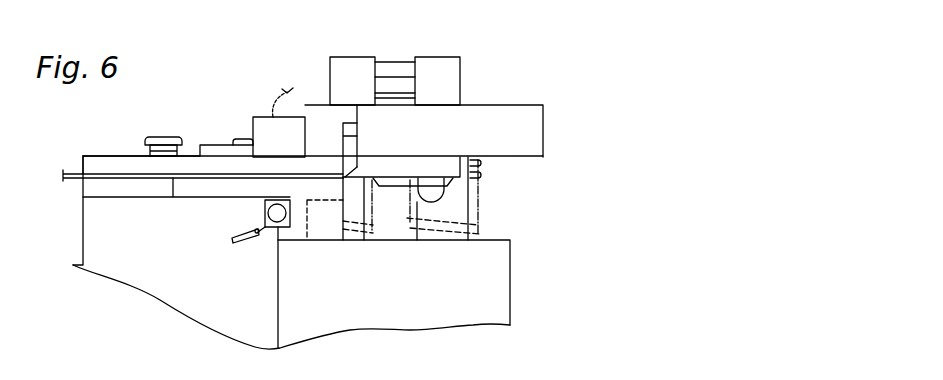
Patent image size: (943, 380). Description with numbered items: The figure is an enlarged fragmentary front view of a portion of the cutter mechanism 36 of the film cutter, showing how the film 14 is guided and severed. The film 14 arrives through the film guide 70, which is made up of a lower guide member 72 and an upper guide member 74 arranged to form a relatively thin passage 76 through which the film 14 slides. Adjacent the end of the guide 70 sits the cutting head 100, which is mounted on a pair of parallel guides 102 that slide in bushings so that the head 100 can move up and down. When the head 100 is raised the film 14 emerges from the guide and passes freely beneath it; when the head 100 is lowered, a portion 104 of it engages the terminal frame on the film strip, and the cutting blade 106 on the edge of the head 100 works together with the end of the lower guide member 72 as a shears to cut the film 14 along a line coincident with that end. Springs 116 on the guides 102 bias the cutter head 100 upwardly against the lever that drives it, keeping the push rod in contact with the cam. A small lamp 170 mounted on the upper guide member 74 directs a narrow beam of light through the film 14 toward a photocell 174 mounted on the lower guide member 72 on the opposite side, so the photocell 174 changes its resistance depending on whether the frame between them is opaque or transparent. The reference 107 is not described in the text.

The film 14 is at (74, 181).
The cutter mechanism 36 is at (557, 200).
The film guide 70 is at (110, 142).
The lower guide member 72 is at (193, 190).
The upper guide member 74 is at (134, 156).
The passage 76 is at (145, 182).
The cutting head 100 is at (545, 129).
The guides 102 is at (352, 211).
The portion of the cutting head 104 is at (401, 169).
The cutting blade 106 is at (348, 175).
The recess 107 is at (343, 193).
The springs 116 is at (357, 228).
The lamp 170 is at (267, 128).
The photocell 174 is at (279, 216).